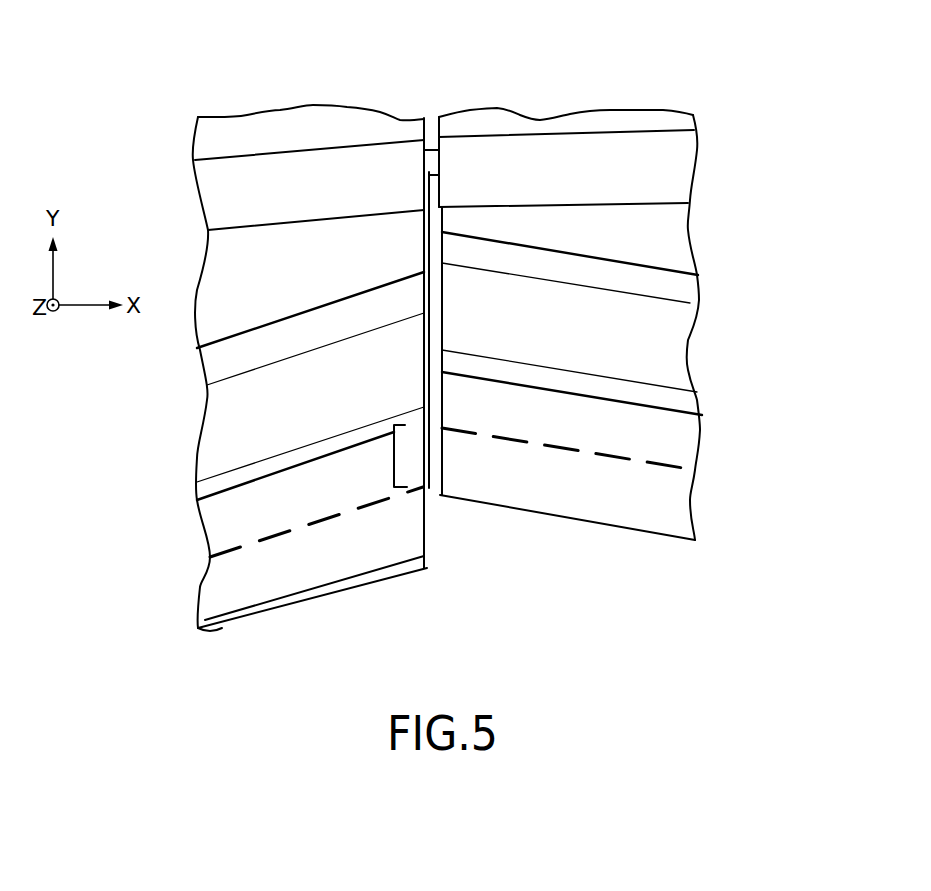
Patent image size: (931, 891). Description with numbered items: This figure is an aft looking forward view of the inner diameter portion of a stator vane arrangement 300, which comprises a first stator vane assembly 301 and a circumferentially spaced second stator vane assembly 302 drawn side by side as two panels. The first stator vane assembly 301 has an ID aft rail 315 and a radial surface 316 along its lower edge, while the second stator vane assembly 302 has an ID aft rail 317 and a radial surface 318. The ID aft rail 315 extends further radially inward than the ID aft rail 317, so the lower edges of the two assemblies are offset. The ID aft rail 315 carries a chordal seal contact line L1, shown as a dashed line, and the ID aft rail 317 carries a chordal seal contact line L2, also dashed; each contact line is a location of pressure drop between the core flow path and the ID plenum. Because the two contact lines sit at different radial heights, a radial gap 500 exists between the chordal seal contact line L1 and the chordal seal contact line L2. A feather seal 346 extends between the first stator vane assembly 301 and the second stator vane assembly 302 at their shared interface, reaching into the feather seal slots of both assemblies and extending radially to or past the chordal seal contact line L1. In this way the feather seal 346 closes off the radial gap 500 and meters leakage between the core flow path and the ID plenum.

The stator vane arrangement 300 is at (374, 87).
The first stator vane assembly 301 is at (146, 125).
The second stator vane assembly 302 is at (748, 127).
The ID aft rail 315 is at (215, 435).
The radial surface 316 is at (345, 590).
The ID aft rail 317 is at (670, 333).
The radial surface 318 is at (538, 512).
The feather seal 346 is at (430, 488).
The radial gap 500 is at (394, 455).
The chordal seal contact line L1 is at (252, 543).
The chordal seal contact line L2 is at (622, 460).